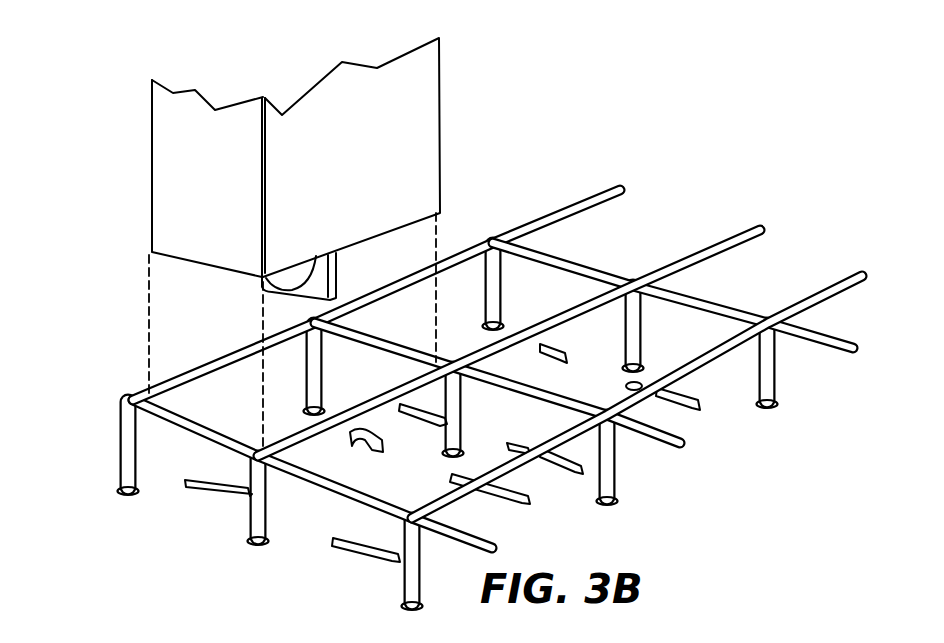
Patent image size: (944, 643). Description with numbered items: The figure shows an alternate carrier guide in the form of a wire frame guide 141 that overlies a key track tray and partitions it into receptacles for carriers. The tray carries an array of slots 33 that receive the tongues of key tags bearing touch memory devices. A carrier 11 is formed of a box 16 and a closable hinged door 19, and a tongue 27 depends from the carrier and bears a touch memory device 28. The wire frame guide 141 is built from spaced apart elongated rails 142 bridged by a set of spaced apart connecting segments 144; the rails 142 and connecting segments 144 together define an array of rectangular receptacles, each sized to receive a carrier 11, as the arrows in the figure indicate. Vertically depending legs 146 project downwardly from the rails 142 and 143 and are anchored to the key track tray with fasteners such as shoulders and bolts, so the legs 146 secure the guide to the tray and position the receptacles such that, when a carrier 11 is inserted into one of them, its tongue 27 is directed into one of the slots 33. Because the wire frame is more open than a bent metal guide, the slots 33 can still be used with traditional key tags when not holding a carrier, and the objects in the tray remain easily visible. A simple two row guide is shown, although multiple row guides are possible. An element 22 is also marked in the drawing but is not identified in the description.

The carrier 11 is at (478, 87).
The box 16 is at (163, 212).
The closable hinged door 19 is at (405, 128).
The front rail 22 is at (183, 402).
The tongue 27 is at (337, 267).
The touch memory device 28 is at (293, 283).
The slots 33 is at (548, 350).
The wire frame guide 141 is at (477, 232).
The elongated rails 142 is at (626, 386).
The rail 143 is at (456, 250).
The connecting segments 144 is at (408, 356).
The legs 146 is at (494, 284).